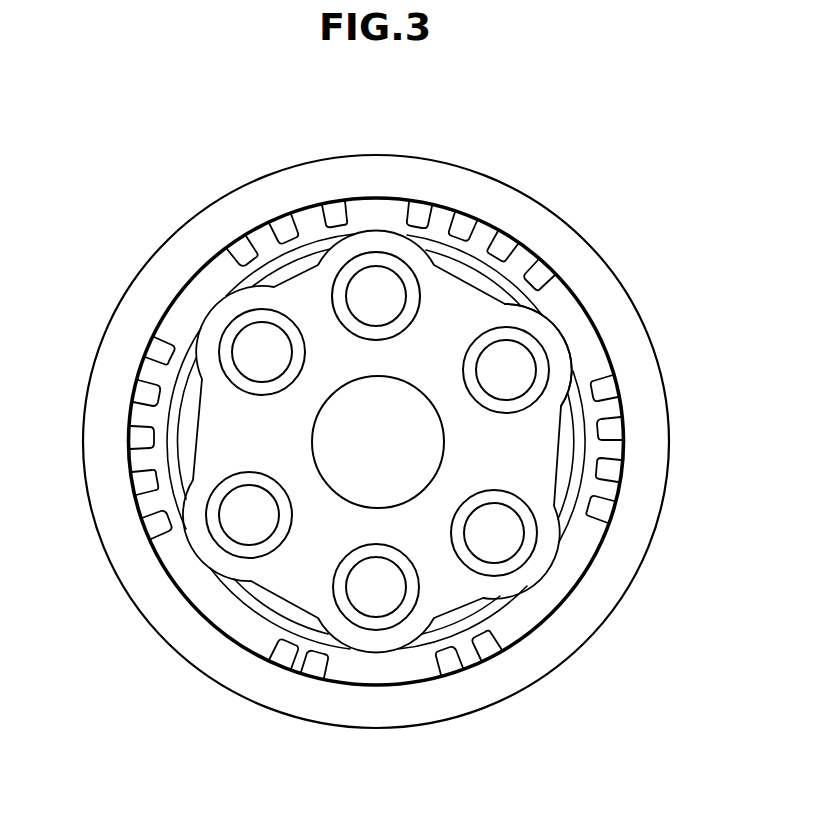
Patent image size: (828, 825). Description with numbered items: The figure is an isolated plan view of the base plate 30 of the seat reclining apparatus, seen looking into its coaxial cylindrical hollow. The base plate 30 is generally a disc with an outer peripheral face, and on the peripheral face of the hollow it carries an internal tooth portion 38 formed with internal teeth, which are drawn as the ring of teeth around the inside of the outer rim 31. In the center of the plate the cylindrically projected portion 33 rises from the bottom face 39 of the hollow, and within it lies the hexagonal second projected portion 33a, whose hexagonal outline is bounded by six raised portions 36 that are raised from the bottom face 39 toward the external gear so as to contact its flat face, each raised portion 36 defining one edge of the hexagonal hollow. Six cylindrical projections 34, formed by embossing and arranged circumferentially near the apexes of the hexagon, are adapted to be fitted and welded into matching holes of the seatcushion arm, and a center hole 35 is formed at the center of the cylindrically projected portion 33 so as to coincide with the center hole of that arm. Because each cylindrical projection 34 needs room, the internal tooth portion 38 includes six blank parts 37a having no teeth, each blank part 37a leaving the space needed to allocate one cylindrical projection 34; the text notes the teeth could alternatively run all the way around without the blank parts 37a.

The base plate 30 is at (495, 178).
The clutch outer ring 31 is at (598, 305).
The cylindrically projected portion 33 is at (555, 590).
The second projected portion 33a is at (530, 472).
The cylindrical projections 34 is at (262, 350).
The center hole 35 is at (323, 477).
The raised portions 36 is at (533, 250).
The blank parts 37a is at (372, 685).
The internal tooth portion 38 is at (308, 210).
The bottom face 39 is at (288, 248).